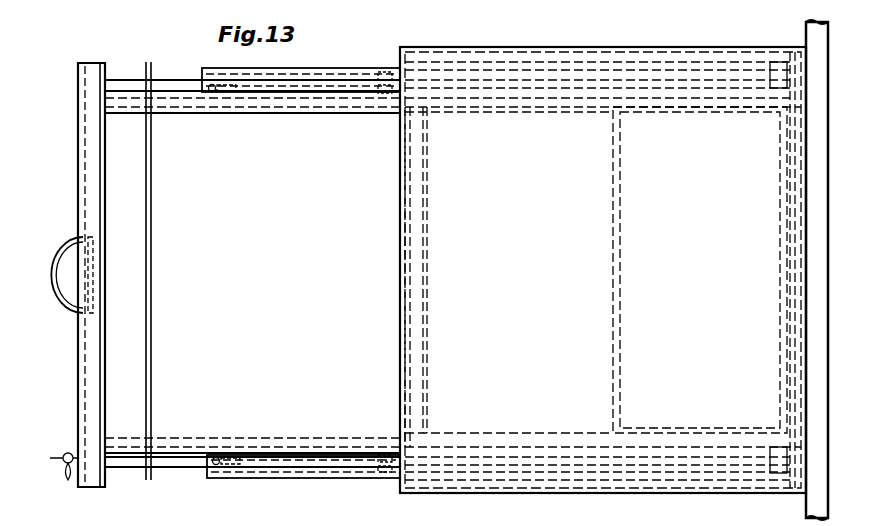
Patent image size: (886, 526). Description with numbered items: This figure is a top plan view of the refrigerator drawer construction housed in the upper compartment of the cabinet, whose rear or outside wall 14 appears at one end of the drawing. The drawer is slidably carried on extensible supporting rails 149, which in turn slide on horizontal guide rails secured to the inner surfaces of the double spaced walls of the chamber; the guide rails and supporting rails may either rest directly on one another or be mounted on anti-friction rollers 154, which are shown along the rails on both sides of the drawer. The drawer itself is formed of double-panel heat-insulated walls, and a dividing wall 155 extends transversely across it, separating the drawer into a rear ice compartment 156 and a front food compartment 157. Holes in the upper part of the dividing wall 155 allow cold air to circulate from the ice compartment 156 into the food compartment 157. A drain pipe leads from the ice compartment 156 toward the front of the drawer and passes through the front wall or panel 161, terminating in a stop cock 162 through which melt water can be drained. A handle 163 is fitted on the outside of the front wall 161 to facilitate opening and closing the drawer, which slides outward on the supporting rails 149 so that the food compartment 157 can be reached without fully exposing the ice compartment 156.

The rear or outside wall or panel 14 is at (614, 260).
The extensible supporting rails 149 is at (268, 78).
The anti-friction rollers 154 is at (233, 90).
The dividing wall 155 is at (412, 226).
The rear ice compartment 156 is at (642, 270).
The front food compartment 157 is at (277, 275).
The front wall or panel 161 is at (100, 188).
The stop cock 162 is at (66, 453).
The handle 163 is at (85, 236).